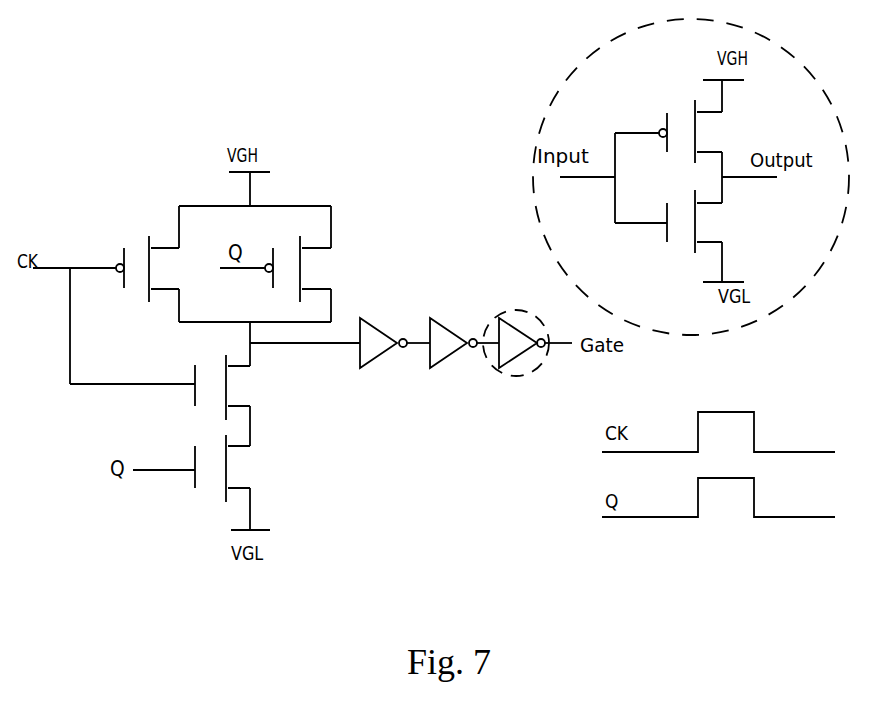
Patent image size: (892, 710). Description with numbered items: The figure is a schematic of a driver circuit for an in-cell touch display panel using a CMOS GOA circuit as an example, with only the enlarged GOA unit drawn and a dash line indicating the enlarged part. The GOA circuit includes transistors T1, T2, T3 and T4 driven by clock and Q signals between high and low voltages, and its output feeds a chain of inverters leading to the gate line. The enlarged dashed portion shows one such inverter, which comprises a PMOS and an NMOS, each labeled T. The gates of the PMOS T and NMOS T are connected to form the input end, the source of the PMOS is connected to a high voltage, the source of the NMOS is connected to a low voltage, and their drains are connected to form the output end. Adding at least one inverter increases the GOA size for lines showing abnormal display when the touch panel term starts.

The first transistor T1 is at (153, 269).
The second transistor T2 is at (306, 269).
The third transistor T3 is at (231, 387).
The fourth transistor T4 is at (231, 468).
The inverter transistor T is at (690, 176).